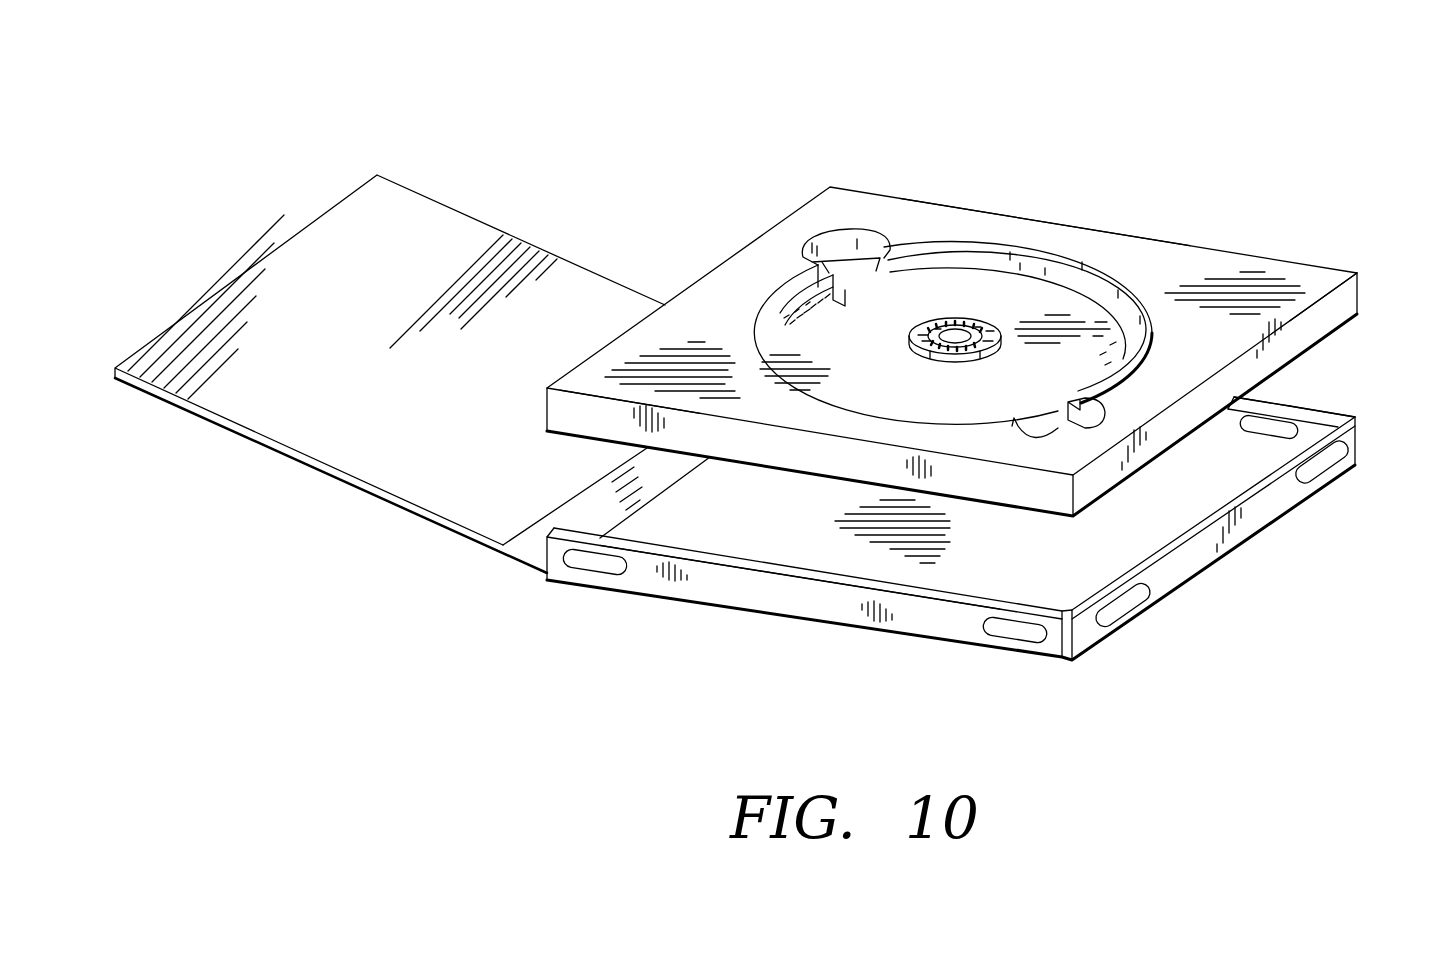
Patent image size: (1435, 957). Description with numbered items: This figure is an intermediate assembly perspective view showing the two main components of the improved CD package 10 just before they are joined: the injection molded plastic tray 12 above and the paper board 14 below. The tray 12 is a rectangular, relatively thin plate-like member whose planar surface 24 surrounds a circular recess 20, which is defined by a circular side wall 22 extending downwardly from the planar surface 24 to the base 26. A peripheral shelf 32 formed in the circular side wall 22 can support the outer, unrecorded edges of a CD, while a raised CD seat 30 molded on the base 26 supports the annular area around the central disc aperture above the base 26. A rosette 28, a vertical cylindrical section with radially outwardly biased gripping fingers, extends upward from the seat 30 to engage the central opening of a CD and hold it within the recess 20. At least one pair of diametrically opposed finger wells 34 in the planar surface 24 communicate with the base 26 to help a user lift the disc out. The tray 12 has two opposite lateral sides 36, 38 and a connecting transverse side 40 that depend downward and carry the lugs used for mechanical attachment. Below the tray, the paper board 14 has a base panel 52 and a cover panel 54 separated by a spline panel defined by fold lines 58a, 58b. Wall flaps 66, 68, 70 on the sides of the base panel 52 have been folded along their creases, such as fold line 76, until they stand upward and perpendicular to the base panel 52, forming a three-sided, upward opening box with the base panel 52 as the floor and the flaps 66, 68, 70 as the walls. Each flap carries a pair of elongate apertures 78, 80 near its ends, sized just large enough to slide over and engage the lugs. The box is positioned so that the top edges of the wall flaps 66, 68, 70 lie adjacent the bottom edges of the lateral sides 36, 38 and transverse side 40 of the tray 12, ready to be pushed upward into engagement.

The CD package 10 is at (773, 148).
The tray 12 is at (877, 447).
The paper board 14 is at (807, 617).
The circular recess 20 is at (1095, 365).
The circular side wall 22 is at (795, 288).
The planar surface 24 is at (1230, 285).
The base 26 is at (1063, 398).
The rosette 28 is at (935, 330).
The raised CD seat 30 is at (1005, 328).
The peripheral shelf 32 is at (795, 315).
The finger wells 34 is at (845, 245).
The lateral side 36 is at (565, 428).
The lateral side 38 is at (1035, 215).
The transverse side 40 is at (1340, 305).
The base panel 52 is at (1070, 568).
The cover panel 54 is at (300, 265).
The fold line 58a is at (640, 500).
The fold line 58b is at (580, 494).
The wall flap 66 is at (918, 622).
The wall flap 68 is at (1245, 420).
The wall flap 70 is at (1198, 565).
The fold line 76 is at (1215, 445).
The aperture 78 is at (1270, 435).
The aperture 80 is at (1320, 465).